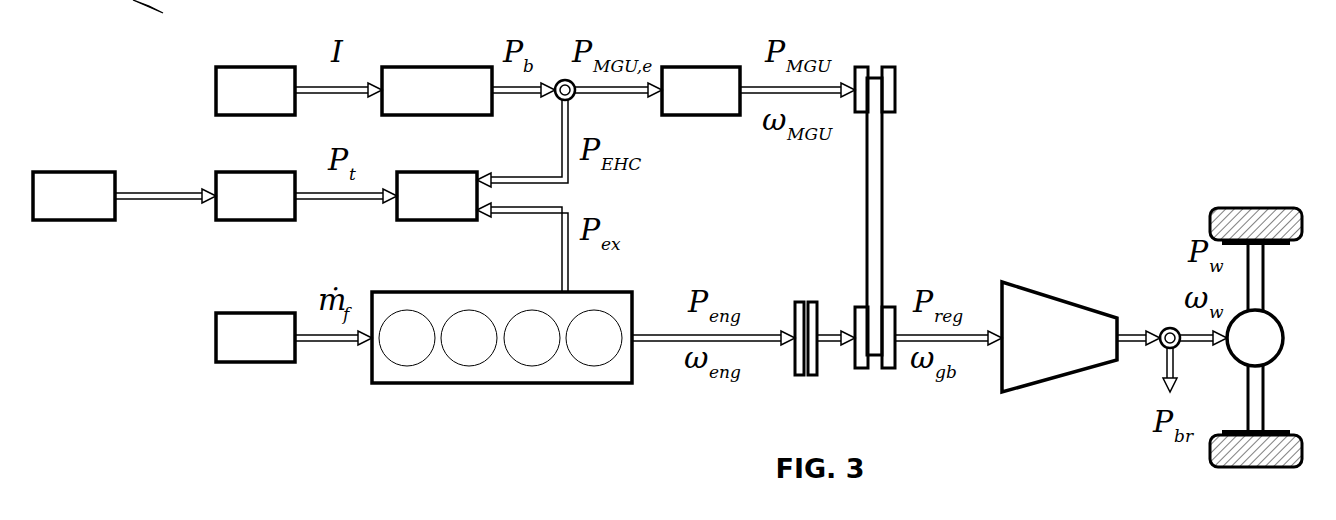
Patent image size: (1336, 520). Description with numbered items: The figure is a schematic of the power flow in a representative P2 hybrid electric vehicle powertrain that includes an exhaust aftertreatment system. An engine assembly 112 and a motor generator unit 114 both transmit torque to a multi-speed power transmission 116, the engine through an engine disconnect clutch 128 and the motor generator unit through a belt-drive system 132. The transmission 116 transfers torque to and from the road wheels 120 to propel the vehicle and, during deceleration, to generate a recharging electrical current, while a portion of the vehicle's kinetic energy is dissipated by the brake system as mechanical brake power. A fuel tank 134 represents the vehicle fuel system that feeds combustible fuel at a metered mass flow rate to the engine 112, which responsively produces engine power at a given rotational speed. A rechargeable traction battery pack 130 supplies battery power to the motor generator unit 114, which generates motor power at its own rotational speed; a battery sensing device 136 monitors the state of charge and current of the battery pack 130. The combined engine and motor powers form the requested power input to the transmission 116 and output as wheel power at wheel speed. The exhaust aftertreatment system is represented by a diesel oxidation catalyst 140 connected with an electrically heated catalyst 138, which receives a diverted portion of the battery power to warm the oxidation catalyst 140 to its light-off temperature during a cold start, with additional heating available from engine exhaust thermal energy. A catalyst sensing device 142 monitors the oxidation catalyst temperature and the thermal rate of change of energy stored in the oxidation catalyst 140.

The engine assembly 112 is at (384, 383).
The motor generator unit 114 is at (672, 67).
The multi-speed power transmission 116 is at (1045, 290).
The road wheels 120 is at (1275, 208).
The engine disconnect clutch 128 is at (808, 375).
The rechargeable traction battery pack 130 is at (398, 67).
The belt-drive system 132 is at (883, 225).
The fuel tank 134 is at (232, 362).
The battery sensing device 136 is at (230, 67).
The Electrically Heated Catalyst 138 is at (418, 220).
The Diesel Oxidation Catalyst 140 is at (232, 220).
The DOC sensing device 142 is at (53, 220).